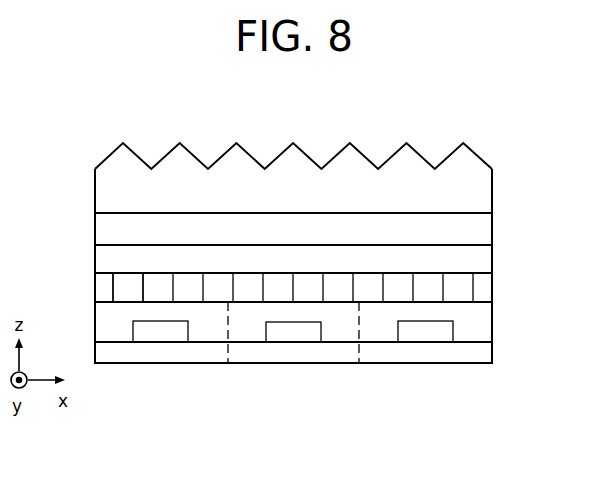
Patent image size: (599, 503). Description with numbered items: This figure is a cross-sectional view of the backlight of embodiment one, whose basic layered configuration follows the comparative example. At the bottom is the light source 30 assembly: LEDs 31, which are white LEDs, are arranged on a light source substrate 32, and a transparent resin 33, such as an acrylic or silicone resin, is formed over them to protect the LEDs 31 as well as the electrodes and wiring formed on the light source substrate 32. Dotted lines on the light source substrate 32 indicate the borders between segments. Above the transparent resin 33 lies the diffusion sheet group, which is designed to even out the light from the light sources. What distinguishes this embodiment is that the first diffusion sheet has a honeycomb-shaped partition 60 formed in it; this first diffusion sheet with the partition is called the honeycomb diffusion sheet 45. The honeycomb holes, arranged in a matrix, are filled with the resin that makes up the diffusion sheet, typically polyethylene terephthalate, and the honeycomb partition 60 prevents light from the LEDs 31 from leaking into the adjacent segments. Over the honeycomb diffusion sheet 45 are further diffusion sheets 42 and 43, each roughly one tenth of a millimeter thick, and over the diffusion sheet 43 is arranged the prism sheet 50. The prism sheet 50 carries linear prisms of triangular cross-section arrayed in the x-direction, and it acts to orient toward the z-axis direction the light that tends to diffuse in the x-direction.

The electrode group / pixel electrode layer 30 is at (293, 393).
The LEDs 31 is at (163, 332).
The light source substrate 32 is at (295, 357).
The transparent resin 33 is at (413, 369).
The diffusion sheet 42 is at (470, 261).
The diffusion sheet 43 is at (470, 232).
The honeycomb diffusion sheet 45 is at (483, 293).
The prism sheet 50 is at (470, 192).
The honeycomb partition 60 is at (113, 290).